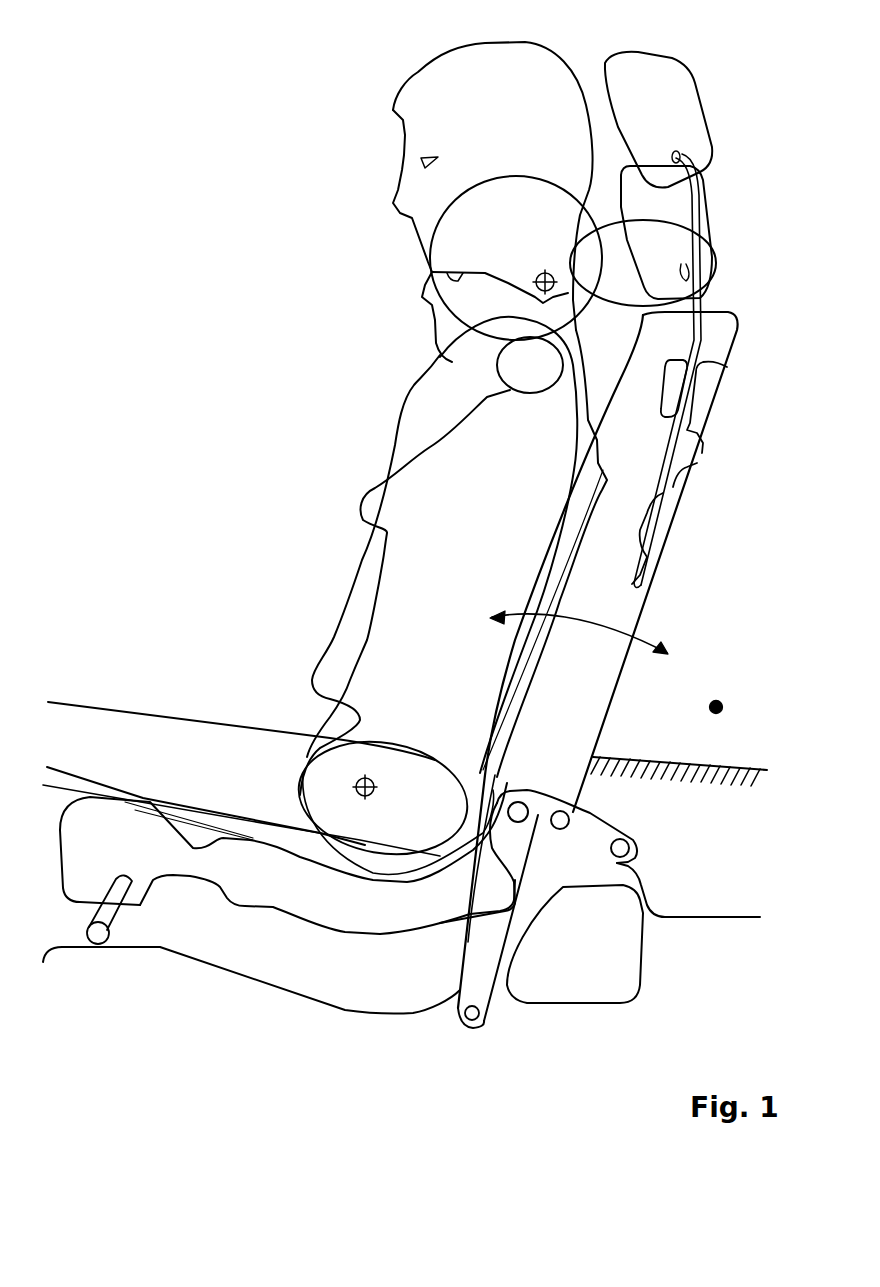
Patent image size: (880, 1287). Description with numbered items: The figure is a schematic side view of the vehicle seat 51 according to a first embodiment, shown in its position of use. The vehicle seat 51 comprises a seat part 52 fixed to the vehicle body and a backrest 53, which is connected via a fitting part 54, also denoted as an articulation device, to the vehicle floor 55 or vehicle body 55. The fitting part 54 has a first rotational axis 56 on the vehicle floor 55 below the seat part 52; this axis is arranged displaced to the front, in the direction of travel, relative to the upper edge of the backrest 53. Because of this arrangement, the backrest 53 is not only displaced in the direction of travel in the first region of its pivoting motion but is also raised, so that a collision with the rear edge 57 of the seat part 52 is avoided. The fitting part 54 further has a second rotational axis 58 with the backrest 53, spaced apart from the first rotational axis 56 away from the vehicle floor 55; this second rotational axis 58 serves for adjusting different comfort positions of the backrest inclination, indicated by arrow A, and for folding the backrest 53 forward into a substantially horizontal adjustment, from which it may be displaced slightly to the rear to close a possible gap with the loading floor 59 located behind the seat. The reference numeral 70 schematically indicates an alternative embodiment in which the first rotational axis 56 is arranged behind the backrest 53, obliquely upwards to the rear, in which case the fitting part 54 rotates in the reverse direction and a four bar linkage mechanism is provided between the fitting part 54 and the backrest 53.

The vehicle seat 51 is at (218, 417).
The seat part 52 is at (283, 893).
The backrest 53 is at (603, 603).
The fitting part 54 is at (470, 944).
The vehicle floor 55 is at (280, 907).
The first rotational axis 56 is at (472, 1020).
The rear edge 57 is at (538, 880).
The second rotational axis 58 is at (520, 805).
The loading floor 59 is at (730, 762).
The first rotational axis position of alternative embodiment 70 is at (726, 697).
The arrow A is at (650, 630).